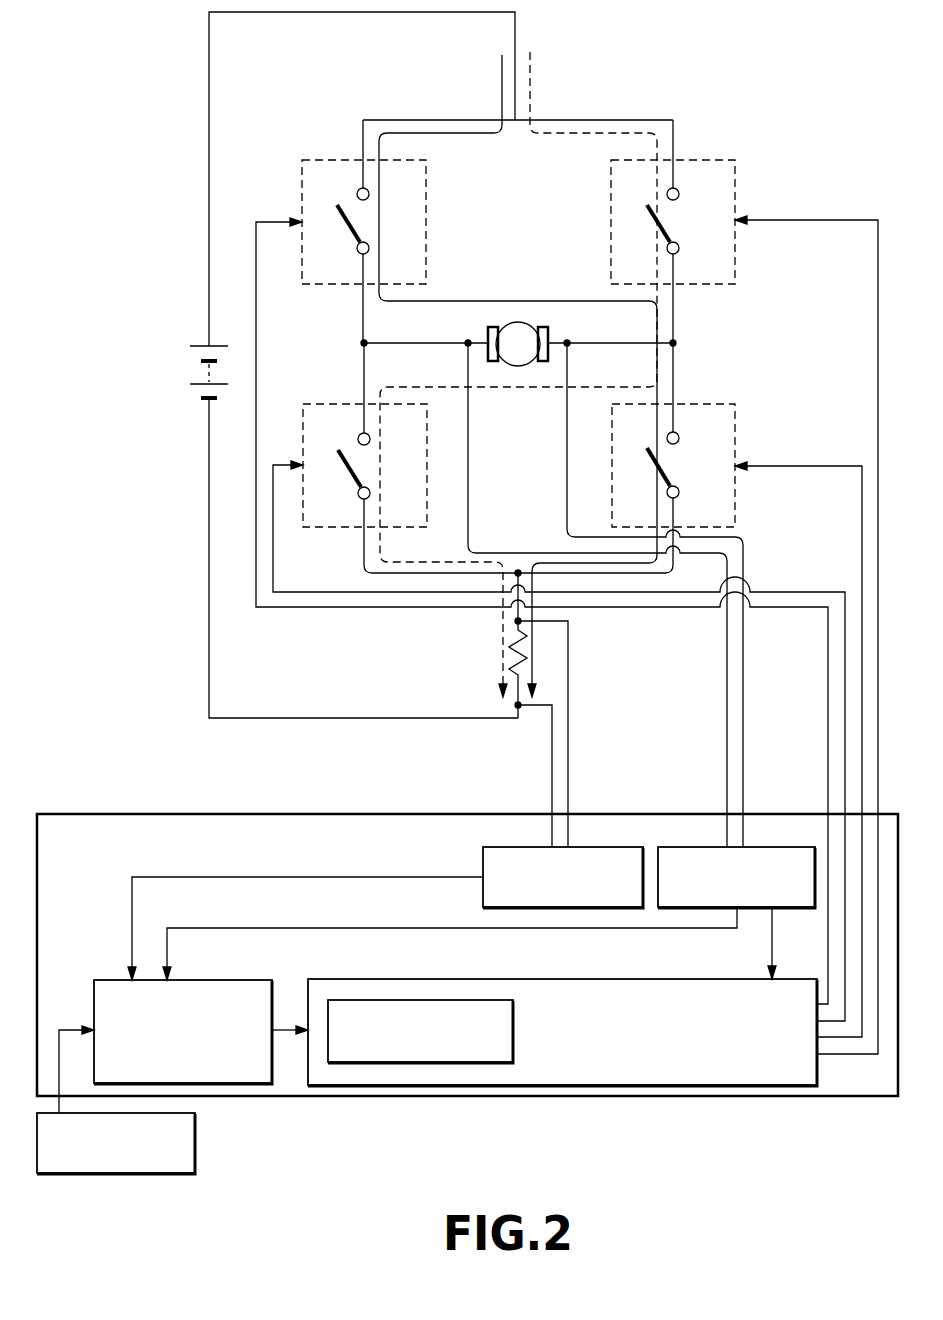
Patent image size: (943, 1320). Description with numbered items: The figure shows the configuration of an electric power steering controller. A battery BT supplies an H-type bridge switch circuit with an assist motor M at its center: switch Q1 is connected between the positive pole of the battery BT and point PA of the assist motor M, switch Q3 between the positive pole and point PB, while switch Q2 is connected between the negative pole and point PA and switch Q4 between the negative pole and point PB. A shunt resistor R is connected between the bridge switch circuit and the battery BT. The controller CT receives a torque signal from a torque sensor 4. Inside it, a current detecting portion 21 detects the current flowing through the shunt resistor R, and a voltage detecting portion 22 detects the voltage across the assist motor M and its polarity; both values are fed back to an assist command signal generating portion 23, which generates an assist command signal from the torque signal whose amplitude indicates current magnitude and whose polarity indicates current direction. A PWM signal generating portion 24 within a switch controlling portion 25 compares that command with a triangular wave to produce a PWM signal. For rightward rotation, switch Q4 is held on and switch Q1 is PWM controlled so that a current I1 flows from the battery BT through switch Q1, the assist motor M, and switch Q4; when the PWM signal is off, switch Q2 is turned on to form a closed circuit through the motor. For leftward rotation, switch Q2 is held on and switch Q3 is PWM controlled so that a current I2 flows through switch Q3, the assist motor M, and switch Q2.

The battery BT is at (190, 346).
The switch Q1 is at (322, 158).
The switch Q2 is at (325, 401).
The switch Q3 is at (706, 160).
The switch Q4 is at (705, 404).
The assist motor M is at (518, 322).
The point of the assist motor PA is at (364, 343).
The point of the assist motor PB is at (673, 343).
The current I1 is at (502, 85).
The current I2 is at (530, 85).
The shunt resistor R is at (503, 665).
The controller CT is at (248, 814).
The current detecting portion 21 is at (612, 847).
The voltage detecting portion 22 is at (795, 847).
The assist command signal generating portion 23 is at (200, 980).
The PWM signal generating portion 24 is at (513, 1037).
The switch controlling portion 25 is at (385, 979).
The torque sensor 4 is at (198, 1160).